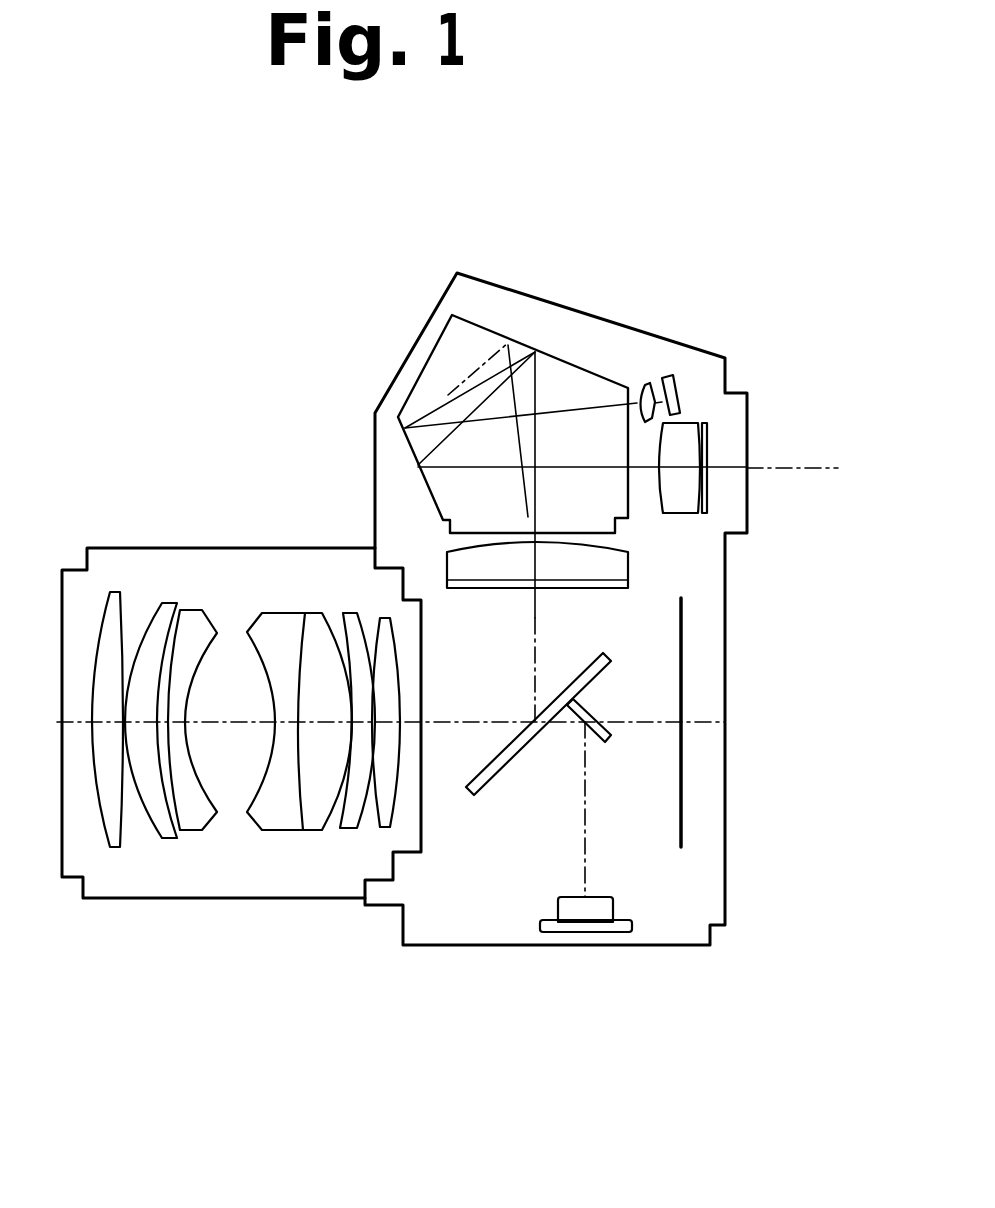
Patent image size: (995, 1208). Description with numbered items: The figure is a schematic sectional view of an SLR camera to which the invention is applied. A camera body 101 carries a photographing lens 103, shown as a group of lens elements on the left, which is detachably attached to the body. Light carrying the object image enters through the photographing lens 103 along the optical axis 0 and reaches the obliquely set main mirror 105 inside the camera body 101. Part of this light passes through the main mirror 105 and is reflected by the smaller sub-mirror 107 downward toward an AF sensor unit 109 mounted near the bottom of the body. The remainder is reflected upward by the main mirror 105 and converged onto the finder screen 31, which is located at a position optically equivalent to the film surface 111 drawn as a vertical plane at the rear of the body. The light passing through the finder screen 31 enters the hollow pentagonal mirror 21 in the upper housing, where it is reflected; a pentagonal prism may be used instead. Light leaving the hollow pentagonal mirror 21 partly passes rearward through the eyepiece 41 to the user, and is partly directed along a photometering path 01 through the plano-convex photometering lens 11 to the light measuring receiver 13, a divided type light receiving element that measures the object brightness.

The camera body 101 is at (713, 880).
The photographing lens 103 is at (190, 560).
The main mirror 105 is at (612, 655).
The sub-mirror 107 is at (593, 712).
The AF sensor unit 109 is at (594, 932).
The film surface 111 is at (683, 802).
The hollow pentagonal mirror 21 is at (570, 387).
The finder screen 31 is at (628, 565).
The eyepiece 41 is at (702, 432).
The photometering lens 11 is at (645, 383).
The light measuring receiver 13 is at (673, 378).
The photometering optical axis 01 is at (592, 387).
The optical axis 0 is at (815, 469).